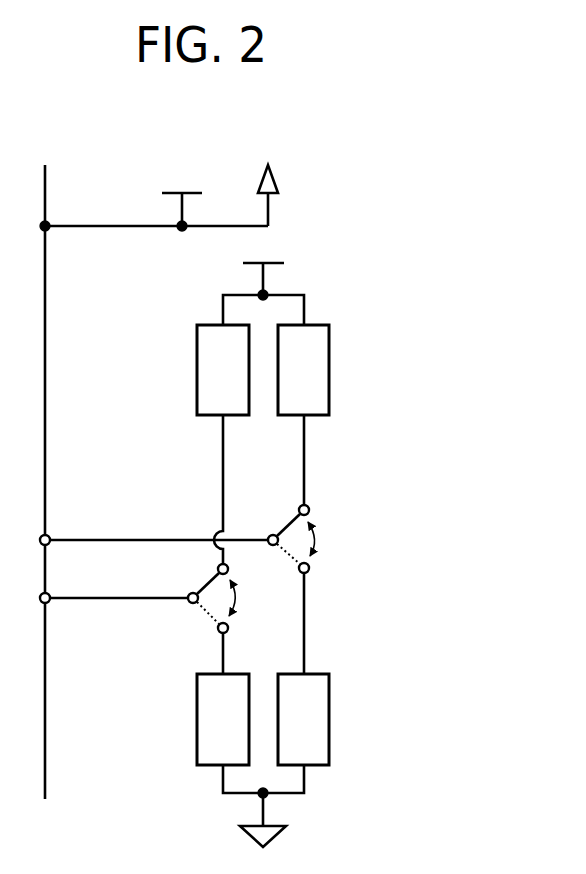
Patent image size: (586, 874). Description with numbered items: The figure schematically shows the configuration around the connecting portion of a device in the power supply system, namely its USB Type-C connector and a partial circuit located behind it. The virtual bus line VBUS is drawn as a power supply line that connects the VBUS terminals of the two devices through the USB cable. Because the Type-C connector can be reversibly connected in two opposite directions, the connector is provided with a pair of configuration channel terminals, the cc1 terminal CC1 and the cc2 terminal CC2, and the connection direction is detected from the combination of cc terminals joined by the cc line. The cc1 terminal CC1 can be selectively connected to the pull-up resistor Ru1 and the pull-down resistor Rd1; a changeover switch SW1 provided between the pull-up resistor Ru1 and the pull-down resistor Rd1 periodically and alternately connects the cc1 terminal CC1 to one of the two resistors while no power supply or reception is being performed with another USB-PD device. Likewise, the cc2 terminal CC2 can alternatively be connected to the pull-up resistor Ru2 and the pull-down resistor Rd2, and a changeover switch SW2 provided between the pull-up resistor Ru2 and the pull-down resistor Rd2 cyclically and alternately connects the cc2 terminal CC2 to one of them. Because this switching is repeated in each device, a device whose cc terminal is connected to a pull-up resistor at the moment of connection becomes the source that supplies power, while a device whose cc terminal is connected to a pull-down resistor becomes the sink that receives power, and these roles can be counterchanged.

The virtual bus line VBUS is at (159, 482).
The cc1 terminal CC1 is at (48, 537).
The cc2 terminal CC2 is at (48, 595).
The changeover switch SW1 is at (327, 536).
The changeover switch SW2 is at (197, 619).
The pull-up resistor Ru1 is at (303, 370).
The pull-up resistor Ru2 is at (223, 370).
The pull-down resistor Rd1 is at (303, 719).
The pull-down resistor Rd2 is at (223, 719).